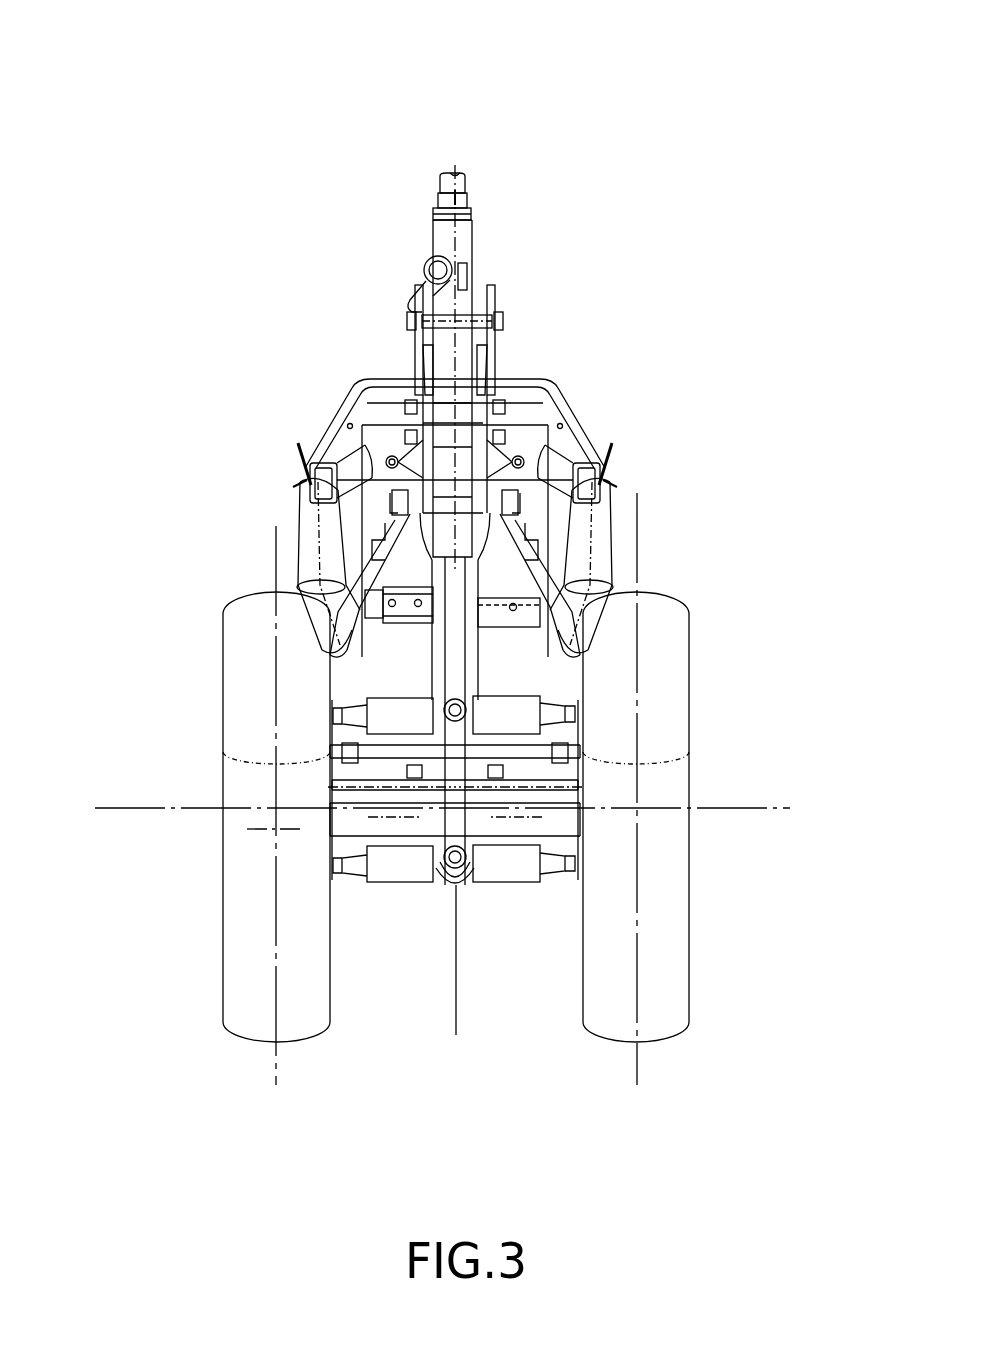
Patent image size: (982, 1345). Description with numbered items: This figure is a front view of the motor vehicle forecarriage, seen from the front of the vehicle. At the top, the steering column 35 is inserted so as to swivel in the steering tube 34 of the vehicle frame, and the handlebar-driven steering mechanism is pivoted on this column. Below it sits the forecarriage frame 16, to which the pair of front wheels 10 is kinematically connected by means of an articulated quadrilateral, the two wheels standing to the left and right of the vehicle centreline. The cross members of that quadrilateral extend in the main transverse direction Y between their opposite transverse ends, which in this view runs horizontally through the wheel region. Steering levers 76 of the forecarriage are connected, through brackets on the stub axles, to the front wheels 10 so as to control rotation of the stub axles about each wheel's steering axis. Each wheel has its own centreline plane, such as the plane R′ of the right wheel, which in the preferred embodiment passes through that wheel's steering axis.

The steering column 35 is at (458, 173).
The steering tube 34 is at (476, 248).
The forecarriage frame 16 is at (513, 352).
The steering levers 76 is at (383, 757).
The front wheels 10 is at (257, 993).
The centreline plane of the right front wheel R′ is at (637, 500).
The main transverse direction Y is at (112, 809).